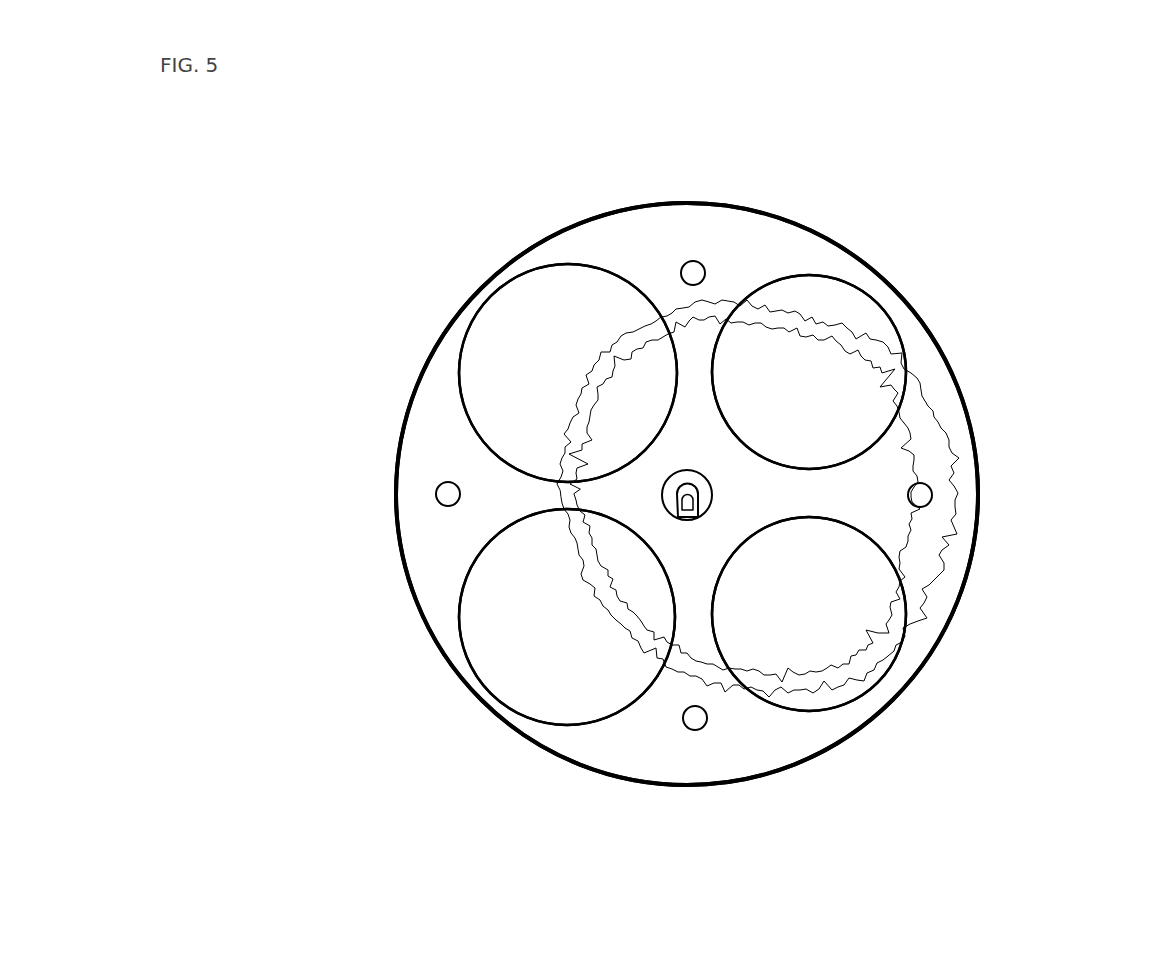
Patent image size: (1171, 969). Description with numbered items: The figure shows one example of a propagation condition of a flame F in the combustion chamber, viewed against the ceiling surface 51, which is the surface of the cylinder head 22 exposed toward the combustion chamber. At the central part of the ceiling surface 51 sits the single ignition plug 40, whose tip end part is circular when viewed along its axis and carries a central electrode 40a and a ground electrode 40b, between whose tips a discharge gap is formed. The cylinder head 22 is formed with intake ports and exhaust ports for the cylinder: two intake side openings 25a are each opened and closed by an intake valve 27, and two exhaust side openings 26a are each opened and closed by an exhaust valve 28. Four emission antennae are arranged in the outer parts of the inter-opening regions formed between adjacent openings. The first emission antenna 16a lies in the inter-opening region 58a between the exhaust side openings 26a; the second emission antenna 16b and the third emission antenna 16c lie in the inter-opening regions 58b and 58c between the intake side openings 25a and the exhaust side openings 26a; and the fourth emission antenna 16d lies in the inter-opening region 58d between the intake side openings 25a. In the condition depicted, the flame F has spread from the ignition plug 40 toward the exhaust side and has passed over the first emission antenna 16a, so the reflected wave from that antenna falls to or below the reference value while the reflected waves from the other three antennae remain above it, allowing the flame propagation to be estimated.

The cylinder head 22 is at (696, 233).
The ceiling surface 51 is at (958, 463).
The intake side opening 25a is at (457, 383).
The exhaust side opening 26a is at (892, 313).
The intake valve 27 is at (516, 340).
The exhaust valve 28 is at (840, 298).
The first emission antenna 16a is at (932, 495).
The second emission antenna 16b is at (700, 262).
The third emission antenna 16c is at (691, 730).
The fourth emission antenna 16d is at (435, 492).
The ignition plug 40 is at (697, 490).
The central electrode 40a is at (710, 494).
The ground electrode 40b is at (698, 512).
The flame F is at (724, 300).
The inter-opening region 58a is at (878, 541).
The inter-opening region 58b is at (677, 302).
The inter-opening region 58c is at (697, 695).
The inter-opening region 58d is at (493, 493).